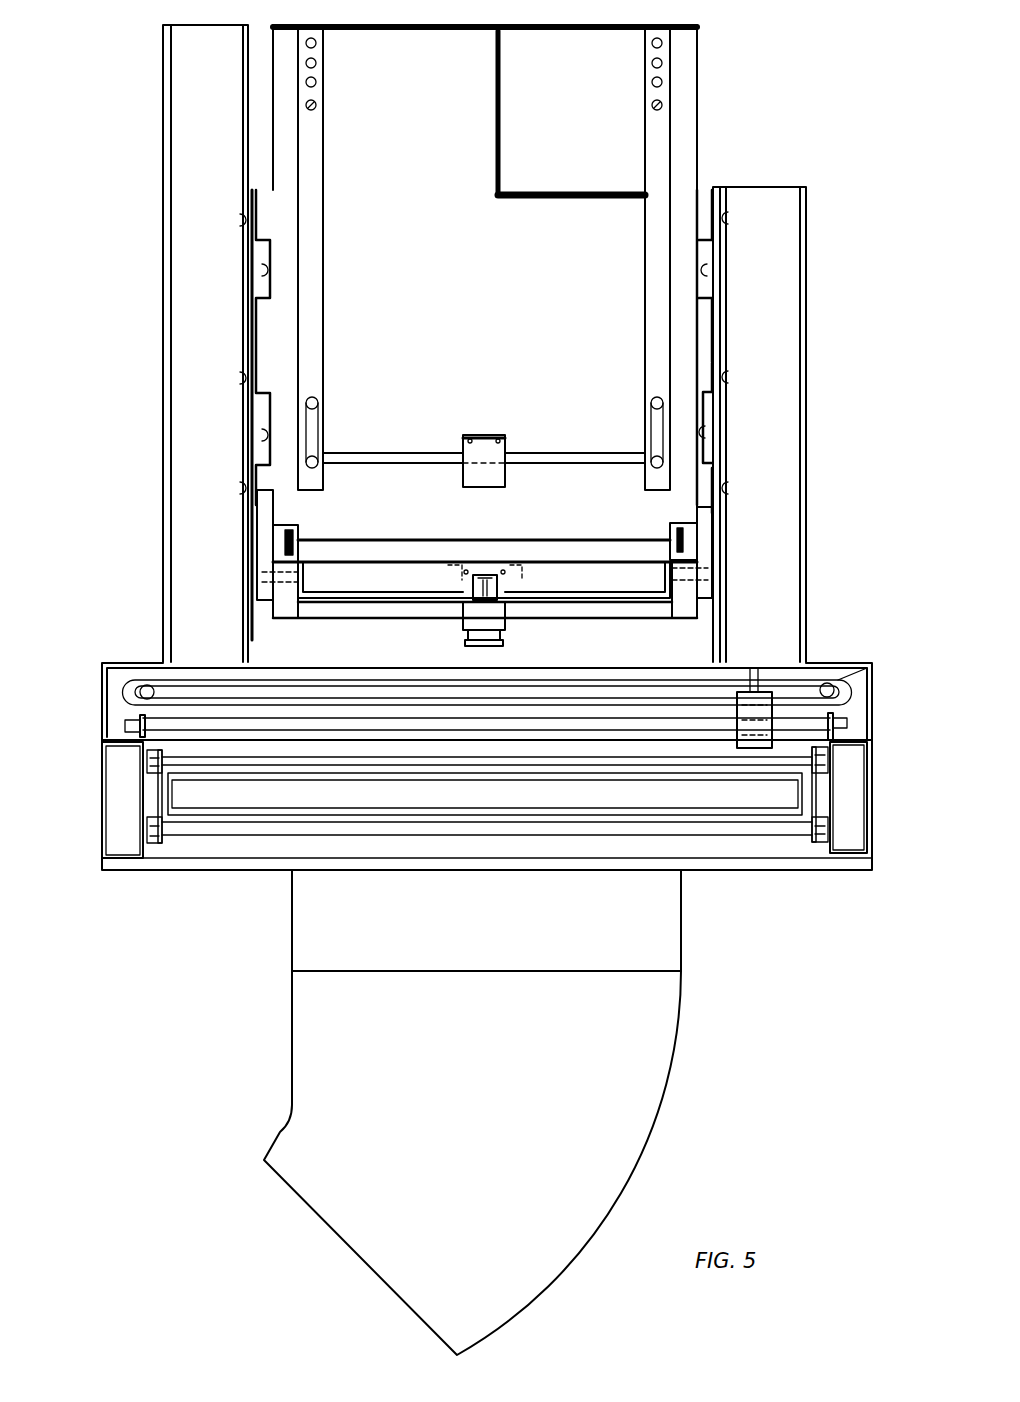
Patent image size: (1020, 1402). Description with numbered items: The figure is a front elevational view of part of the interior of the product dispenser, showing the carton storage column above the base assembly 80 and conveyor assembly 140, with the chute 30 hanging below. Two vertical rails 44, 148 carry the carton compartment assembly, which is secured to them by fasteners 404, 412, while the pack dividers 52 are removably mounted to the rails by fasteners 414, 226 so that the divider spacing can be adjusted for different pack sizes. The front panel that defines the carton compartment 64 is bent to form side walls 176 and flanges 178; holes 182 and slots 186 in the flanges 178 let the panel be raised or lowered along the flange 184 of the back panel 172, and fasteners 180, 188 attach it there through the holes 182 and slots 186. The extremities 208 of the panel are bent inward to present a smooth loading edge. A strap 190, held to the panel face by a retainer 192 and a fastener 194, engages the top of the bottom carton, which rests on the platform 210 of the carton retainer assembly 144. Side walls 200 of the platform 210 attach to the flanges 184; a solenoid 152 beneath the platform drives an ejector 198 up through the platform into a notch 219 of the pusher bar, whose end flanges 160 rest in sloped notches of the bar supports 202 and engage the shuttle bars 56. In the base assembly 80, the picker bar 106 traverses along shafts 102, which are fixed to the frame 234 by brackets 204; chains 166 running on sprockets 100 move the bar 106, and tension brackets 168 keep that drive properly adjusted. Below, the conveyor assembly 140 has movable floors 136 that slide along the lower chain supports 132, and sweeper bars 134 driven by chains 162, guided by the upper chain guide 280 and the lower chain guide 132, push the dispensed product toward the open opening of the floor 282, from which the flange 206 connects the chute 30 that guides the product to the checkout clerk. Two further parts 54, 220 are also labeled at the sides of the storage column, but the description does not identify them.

The chute 30 is at (625, 1102).
The rail 44 is at (323, 215).
The pack divider 52 is at (782, 197).
The bracket 54 is at (262, 540).
The shuttle bar 56 is at (678, 540).
The carton compartment 64 is at (557, 188).
The base assembly 80 is at (850, 640).
The sprocket 100 is at (845, 640).
The shaft 102 is at (430, 732).
The picker bar 106 is at (740, 748).
The lower chain support 132 is at (158, 845).
The sweeper bar 134 is at (368, 758).
The movable floor 136 is at (328, 786).
The conveyor assembly 140 is at (95, 820).
The carton retainer assembly 144 is at (377, 600).
The rail 148 is at (243, 350).
The solenoid 152 is at (498, 636).
The flange 160 is at (257, 573).
The chain 162 is at (153, 760).
The chain 166 is at (415, 672).
The tension bracket 168 is at (148, 688).
The back panel 172 is at (578, 553).
The side wall 176 is at (323, 130).
The flange 178 is at (662, 152).
The fastener 180 is at (316, 106).
The hole 182 is at (316, 63).
The flange 184 is at (691, 38).
The slot 186 is at (318, 408).
The fastener 188 is at (324, 460).
The strap 190 is at (470, 458).
The retainer 192 is at (478, 436).
The fastener 194 is at (504, 438).
The ejector 198 is at (485, 575).
The side wall 200 is at (273, 583).
The bar support 202 is at (286, 600).
The bracket 204 is at (125, 722).
The flange 206 is at (662, 925).
The extremity 208 is at (477, 35).
The platform 210 is at (552, 608).
The notch 219 is at (472, 580).
The bolt 220 is at (700, 590).
The fastener 226 is at (240, 378).
The frame 234 is at (877, 702).
The upper chain guide 280 is at (200, 760).
The floor 282 is at (125, 860).
The fastener 404 is at (262, 270).
The fastener 412 is at (262, 435).
The fastener 414 is at (240, 220).